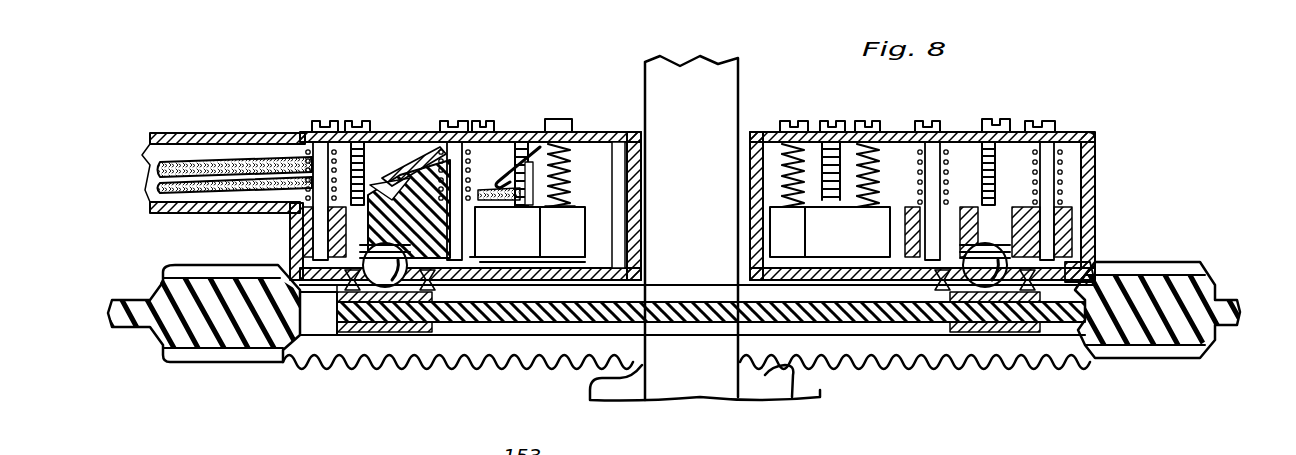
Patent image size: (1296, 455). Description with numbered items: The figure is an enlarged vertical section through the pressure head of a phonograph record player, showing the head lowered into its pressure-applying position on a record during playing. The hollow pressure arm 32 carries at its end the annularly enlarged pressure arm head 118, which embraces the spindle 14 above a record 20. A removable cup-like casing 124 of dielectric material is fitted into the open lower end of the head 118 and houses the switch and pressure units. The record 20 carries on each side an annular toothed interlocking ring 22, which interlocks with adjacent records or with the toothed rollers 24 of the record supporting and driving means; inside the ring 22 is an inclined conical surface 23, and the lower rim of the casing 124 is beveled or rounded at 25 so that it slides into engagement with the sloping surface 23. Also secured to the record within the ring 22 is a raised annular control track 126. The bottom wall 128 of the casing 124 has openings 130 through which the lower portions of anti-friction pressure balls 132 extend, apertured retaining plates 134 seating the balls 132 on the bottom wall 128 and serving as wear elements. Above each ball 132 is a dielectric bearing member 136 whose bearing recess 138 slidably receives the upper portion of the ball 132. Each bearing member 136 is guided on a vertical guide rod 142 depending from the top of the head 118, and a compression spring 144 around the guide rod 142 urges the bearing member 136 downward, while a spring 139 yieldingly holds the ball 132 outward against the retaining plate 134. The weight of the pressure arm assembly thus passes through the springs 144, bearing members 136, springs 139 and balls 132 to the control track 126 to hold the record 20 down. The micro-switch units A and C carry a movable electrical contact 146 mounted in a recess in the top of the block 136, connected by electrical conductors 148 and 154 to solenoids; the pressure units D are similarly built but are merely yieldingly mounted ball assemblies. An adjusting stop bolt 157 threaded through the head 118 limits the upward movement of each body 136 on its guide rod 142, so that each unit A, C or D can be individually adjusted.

The spindle 14 is at (733, 123).
The record 20 is at (1240, 305).
The annular toothed interlocking ring 22 is at (218, 284).
The inclined or tapered conical surface 23 is at (1090, 270).
The toothed roller 24 is at (775, 395).
The beveled or rounded lower edge 25 is at (300, 282).
The pressure arm 32 is at (212, 133).
The pressure arm head 118 is at (962, 131).
The cup-like casing 124 is at (1090, 200).
The annular control track 126 is at (332, 337).
The bottom wall 128 is at (577, 282).
The opening 130 is at (362, 337).
The anti-friction pressure element or ball 132 is at (450, 252).
The apertured retaining plate 134 is at (300, 314).
The bearing member 136 is at (313, 220).
The bearing recess 138 is at (418, 246).
The spring 139 is at (455, 222).
The vertical guide rod 142 is at (556, 128).
The compression spring 144 is at (573, 205).
The movable electrical contact 146 is at (398, 175).
The electrical conductor 148 is at (172, 205).
The electrical conductor 154 is at (171, 168).
The adjusting stop bolt 157 is at (357, 128).
The micro-switch unit A is at (394, 162).
The micro-switch unit C is at (597, 160).
The pressure unit D is at (1064, 179).